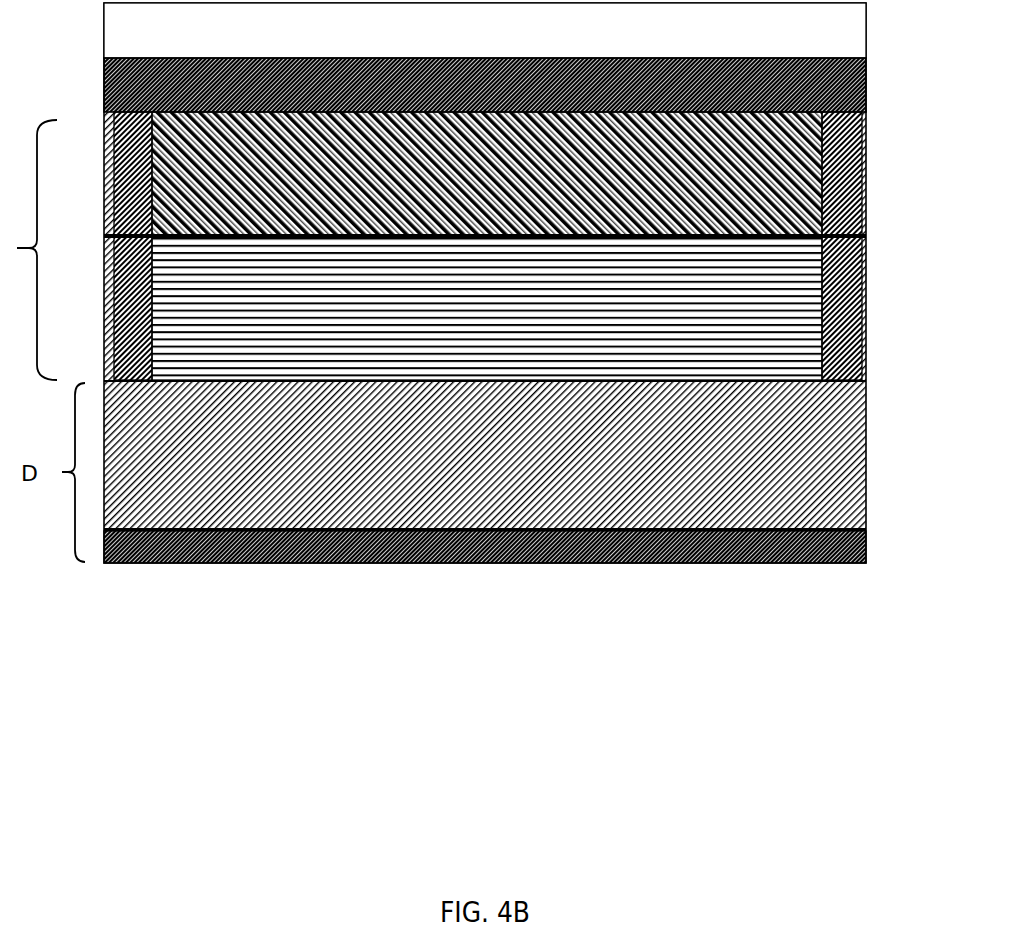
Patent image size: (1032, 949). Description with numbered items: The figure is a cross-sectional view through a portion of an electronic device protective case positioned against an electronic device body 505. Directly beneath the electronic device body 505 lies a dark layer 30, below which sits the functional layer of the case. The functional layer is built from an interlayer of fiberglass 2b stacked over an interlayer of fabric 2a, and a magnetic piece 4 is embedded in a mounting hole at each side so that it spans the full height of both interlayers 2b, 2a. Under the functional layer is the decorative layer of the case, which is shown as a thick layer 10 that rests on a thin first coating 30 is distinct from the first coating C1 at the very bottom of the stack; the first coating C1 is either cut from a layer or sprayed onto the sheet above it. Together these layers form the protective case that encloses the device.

The electronic device body 505 is at (485, 30).
The adhesive layer 30 is at (867, 82).
The interlayer of fiberglass 2b is at (485, 175).
The interlayer of fabric 2a is at (487, 309).
The magnetic piece 4 is at (130, 180).
The substrate 10 is at (827, 488).
The first coating C1 is at (830, 538).